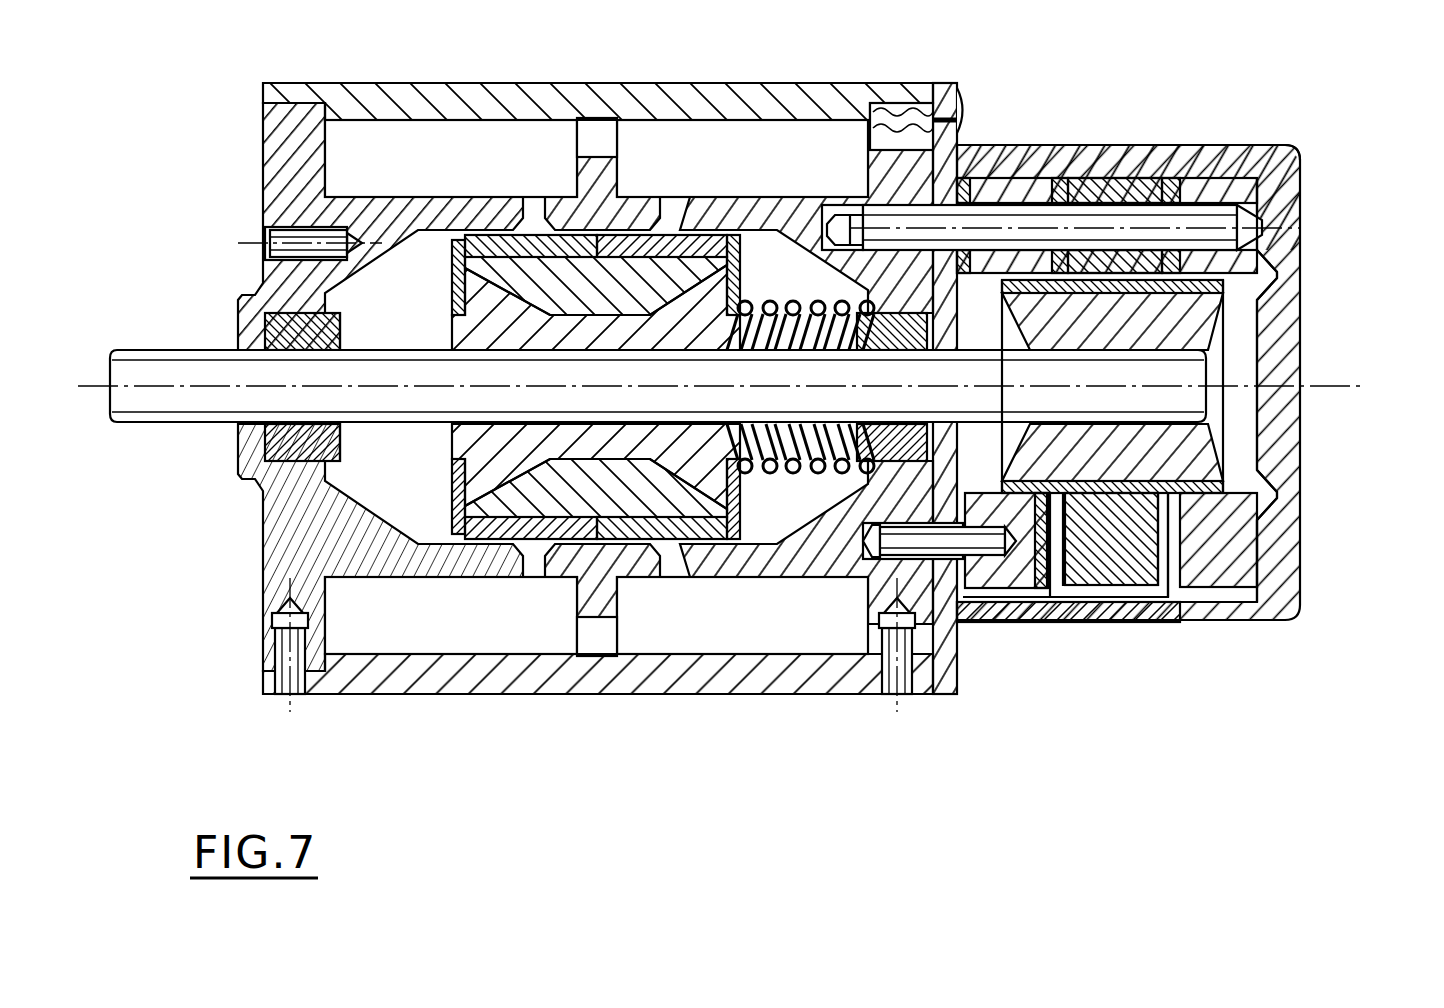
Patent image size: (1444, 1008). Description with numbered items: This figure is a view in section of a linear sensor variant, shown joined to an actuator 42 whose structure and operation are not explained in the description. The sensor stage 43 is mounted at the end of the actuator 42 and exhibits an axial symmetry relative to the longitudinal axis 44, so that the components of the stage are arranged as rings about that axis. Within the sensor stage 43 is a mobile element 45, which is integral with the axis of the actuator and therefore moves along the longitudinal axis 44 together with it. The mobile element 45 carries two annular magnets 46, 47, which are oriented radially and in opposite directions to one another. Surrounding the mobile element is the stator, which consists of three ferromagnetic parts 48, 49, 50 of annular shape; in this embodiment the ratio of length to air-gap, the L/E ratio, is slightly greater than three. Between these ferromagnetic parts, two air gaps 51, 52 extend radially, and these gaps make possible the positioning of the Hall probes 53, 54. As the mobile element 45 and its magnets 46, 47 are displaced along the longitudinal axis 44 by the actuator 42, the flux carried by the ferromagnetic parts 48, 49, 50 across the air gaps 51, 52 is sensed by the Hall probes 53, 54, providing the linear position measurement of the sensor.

The actuator 42 is at (718, 714).
The sensor stage 43 is at (1188, 655).
The longitudinal axis 44 is at (1158, 380).
The mobile element 45 is at (1242, 438).
The annular magnet 46 is at (1244, 483).
The annular magnet 47 is at (1037, 523).
The ferromagnetic part 48 is at (1012, 572).
The ferromagnetic part 49 is at (1226, 504).
The ferromagnetic part 50 is at (1230, 548).
The air gap 51 is at (1172, 550).
The air gap 52 is at (1063, 545).
The Hall probe 53 is at (1107, 513).
The Hall probe 54 is at (1195, 556).